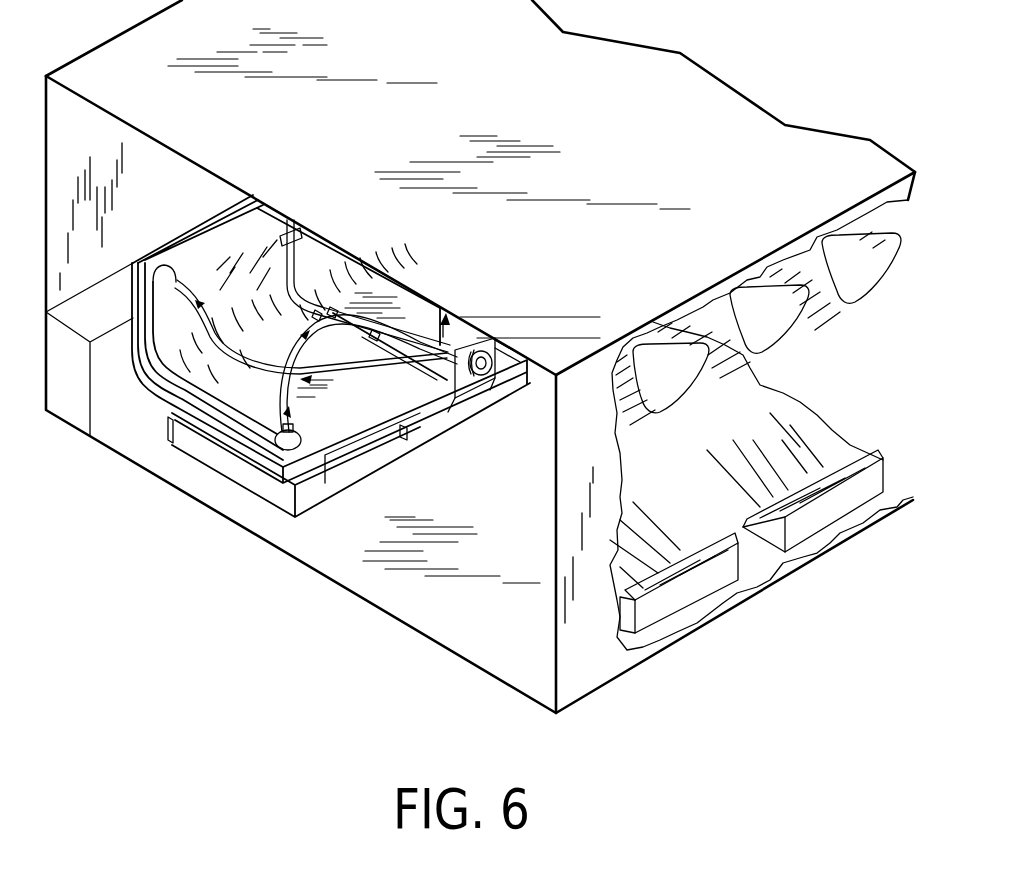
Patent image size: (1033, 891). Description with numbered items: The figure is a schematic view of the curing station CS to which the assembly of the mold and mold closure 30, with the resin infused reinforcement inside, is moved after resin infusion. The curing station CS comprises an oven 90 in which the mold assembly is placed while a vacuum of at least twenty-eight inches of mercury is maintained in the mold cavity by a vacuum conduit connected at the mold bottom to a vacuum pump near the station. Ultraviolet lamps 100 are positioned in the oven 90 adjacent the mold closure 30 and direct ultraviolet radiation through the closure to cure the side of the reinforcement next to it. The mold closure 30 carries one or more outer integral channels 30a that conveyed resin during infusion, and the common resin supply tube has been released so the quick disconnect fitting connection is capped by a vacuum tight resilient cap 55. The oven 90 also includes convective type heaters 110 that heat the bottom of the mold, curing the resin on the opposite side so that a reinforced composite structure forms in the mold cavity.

The oven 90 is at (586, 690).
The ultraviolet lamps 100 is at (783, 338).
The heaters 110 is at (710, 588).
The curing station CS is at (293, 554).
The mold closure 30 is at (278, 452).
The outer integral channels 30a is at (213, 402).
The quick disconnect vacuum tight resilient cap 55 is at (488, 368).